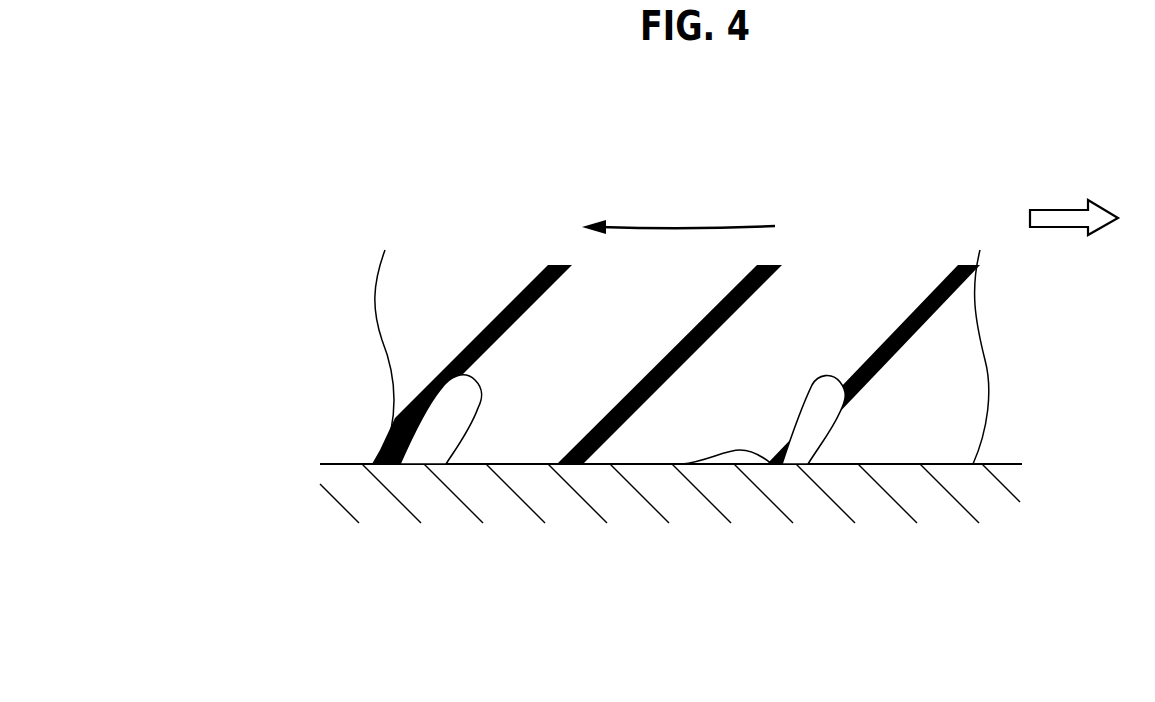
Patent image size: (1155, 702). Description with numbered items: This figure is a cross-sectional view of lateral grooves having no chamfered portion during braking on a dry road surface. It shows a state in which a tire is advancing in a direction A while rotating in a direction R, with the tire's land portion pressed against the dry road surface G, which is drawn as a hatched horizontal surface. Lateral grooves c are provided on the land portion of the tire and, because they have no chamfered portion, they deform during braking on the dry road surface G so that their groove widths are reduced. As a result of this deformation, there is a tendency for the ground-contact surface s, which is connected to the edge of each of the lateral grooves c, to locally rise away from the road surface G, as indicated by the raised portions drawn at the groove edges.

The dry road surface G is at (350, 463).
The lateral grooves c is at (458, 412).
The ground-contact surface s is at (740, 451).
The rotation direction R is at (665, 225).
The advancing direction A is at (1089, 220).